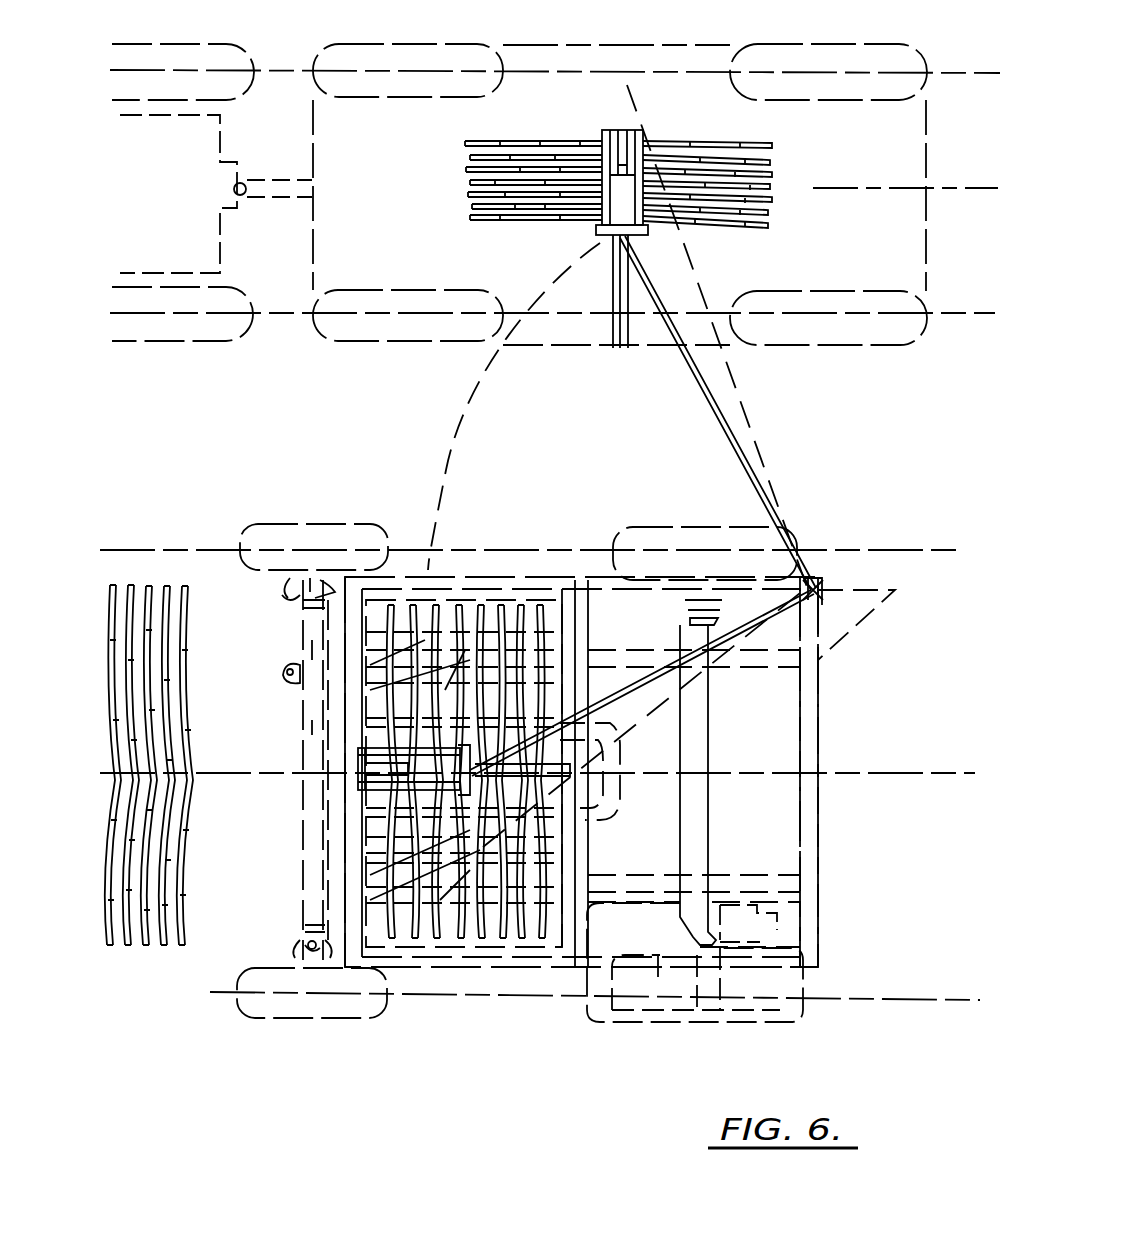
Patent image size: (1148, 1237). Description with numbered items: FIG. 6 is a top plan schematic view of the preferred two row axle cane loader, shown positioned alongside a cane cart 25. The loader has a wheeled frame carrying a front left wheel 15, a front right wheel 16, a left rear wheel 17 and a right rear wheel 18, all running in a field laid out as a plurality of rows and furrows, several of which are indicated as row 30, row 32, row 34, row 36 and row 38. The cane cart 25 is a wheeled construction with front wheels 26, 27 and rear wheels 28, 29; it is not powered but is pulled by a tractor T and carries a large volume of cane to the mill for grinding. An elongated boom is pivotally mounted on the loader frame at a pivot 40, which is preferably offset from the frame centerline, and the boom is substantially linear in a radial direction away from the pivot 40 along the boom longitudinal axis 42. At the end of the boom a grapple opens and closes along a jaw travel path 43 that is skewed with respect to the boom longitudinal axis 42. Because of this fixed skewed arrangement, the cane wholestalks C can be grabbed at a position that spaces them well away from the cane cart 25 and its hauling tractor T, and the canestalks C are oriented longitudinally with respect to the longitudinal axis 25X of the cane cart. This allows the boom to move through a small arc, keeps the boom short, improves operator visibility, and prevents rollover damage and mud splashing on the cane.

The tractor T is at (150, 48).
The cane wholestalks C is at (470, 200).
The front left wheel 15 is at (322, 1012).
The front right wheel 16 is at (312, 522).
The left rear wheel 17 is at (682, 1010).
The right rear wheel 18 is at (655, 527).
The cane cart 25 is at (313, 107).
The longitudinal axis of the cane cart 25X is at (900, 200).
The front wheel of cane cart 26 is at (415, 330).
The front wheel of cane cart 27 is at (412, 50).
The rear wheel of cane cart 28 is at (870, 335).
The rear wheel of cane cart 29 is at (782, 60).
The row 30 is at (210, 68).
The row 32 is at (175, 315).
The row 34 is at (920, 550).
The row 36 is at (932, 773).
The row 38 is at (921, 1000).
The pivot 40 is at (822, 588).
The boom longitudinal axis 42 is at (636, 688).
The jaw travel path 43 is at (412, 778).